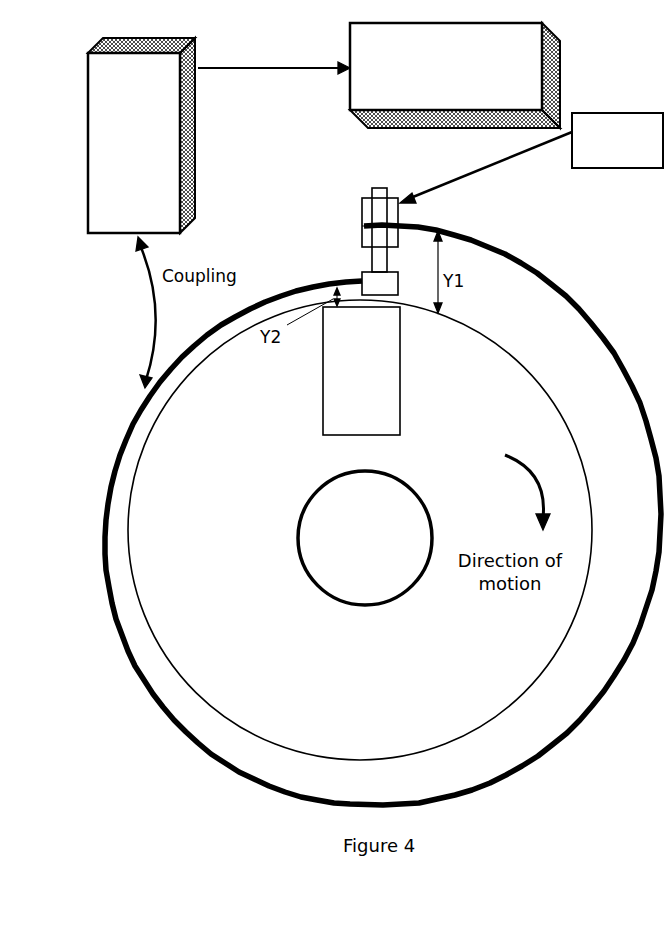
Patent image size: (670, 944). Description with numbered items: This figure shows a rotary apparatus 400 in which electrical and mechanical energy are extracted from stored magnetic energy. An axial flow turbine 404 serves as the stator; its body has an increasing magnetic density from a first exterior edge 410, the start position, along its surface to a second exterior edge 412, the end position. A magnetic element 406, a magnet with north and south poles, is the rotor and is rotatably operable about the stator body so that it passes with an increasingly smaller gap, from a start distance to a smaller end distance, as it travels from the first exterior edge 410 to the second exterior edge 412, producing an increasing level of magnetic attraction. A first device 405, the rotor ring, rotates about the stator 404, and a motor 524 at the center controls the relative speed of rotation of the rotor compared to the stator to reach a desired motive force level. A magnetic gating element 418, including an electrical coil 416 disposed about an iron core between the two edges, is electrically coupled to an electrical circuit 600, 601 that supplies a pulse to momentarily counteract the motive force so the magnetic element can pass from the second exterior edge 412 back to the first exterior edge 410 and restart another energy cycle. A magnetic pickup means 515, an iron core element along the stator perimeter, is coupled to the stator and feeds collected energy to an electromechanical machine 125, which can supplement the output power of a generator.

The magnetic pickup means 515 is at (141, 135).
The electromechanical machine 125 is at (455, 75).
The electrical circuit 600 is at (531, 158).
The controller 601 is at (617, 140).
The axial flow turbine 404 is at (584, 318).
The first device 405 is at (360, 530).
The motor 524 is at (365, 538).
The magnetic element 406 is at (322, 400).
The electrical coil 416 is at (398, 212).
The magnetic gating element 418 is at (350, 194).
The second exterior edge 412 is at (360, 282).
The first exterior edge 410 is at (402, 226).
The rotary apparatus 400 is at (144, 744).